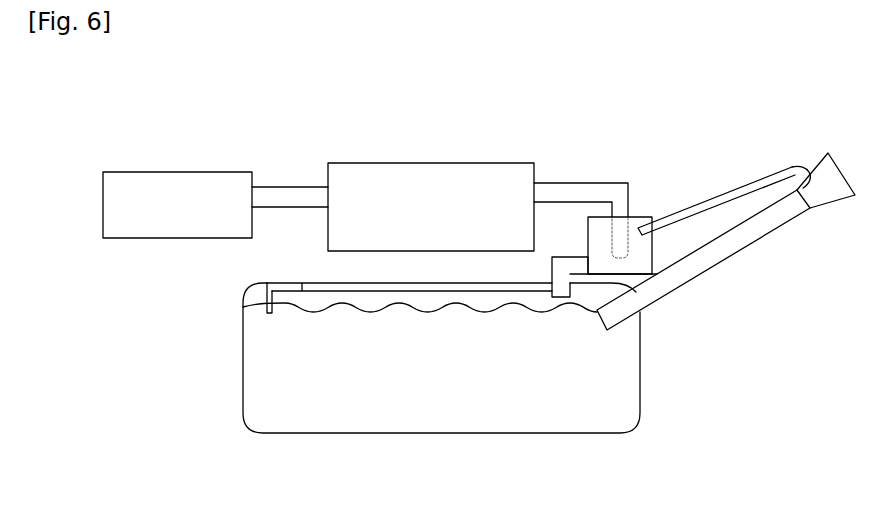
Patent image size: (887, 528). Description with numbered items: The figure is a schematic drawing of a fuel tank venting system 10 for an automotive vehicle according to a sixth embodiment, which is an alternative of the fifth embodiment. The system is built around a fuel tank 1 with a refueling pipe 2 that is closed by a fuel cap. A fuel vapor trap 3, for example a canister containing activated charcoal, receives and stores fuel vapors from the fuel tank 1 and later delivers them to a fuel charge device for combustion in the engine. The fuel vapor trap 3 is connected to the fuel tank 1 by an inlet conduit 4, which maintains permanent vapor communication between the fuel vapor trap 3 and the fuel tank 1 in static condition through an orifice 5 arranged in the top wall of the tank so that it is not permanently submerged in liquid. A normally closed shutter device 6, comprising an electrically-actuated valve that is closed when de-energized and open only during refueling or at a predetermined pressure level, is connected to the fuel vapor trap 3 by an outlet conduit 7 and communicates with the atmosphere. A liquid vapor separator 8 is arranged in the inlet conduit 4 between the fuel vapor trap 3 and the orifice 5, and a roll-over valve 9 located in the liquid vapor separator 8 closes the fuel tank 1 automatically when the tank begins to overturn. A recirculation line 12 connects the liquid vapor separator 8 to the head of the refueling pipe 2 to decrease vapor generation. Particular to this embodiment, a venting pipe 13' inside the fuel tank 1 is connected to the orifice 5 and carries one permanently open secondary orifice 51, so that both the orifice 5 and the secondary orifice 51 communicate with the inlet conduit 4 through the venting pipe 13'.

The fuel tank 1 is at (632, 427).
The refueling pipe 2 is at (727, 259).
The fuel vapor trap 3 is at (428, 163).
The inlet conduit 4 is at (567, 257).
The orifice 5 is at (566, 297).
The normally closed shutter device 6 is at (160, 172).
The outlet conduit 7 is at (293, 187).
The liquid vapor separator 8 is at (652, 250).
The roll-over valve 9 is at (652, 217).
The fuel tank venting system 10 is at (166, 398).
The recirculation line 12 is at (742, 186).
The venting pipe 13' is at (444, 396).
The secondary orifice 51 is at (268, 310).